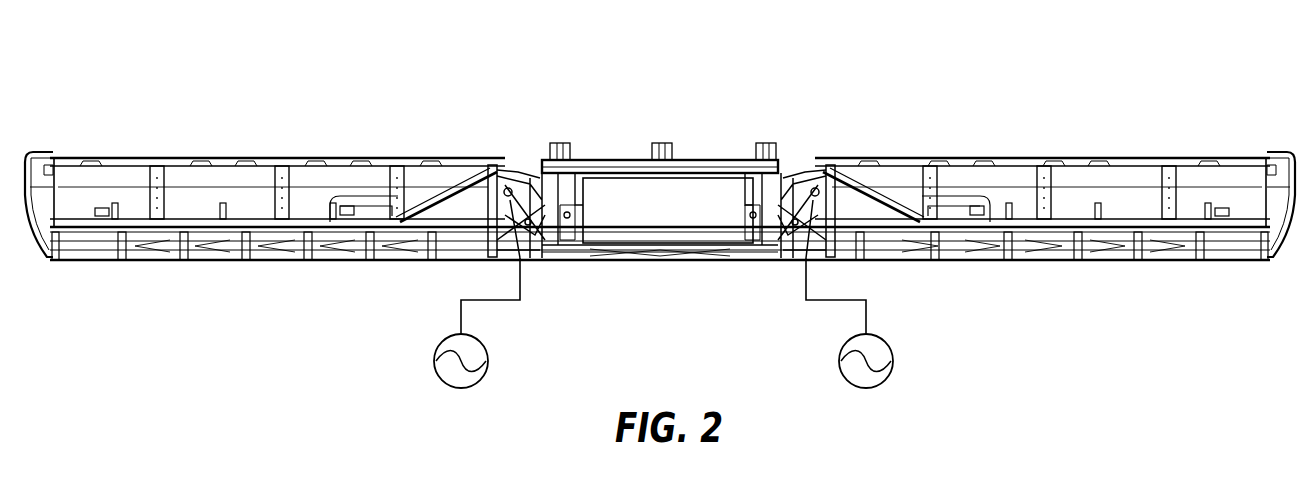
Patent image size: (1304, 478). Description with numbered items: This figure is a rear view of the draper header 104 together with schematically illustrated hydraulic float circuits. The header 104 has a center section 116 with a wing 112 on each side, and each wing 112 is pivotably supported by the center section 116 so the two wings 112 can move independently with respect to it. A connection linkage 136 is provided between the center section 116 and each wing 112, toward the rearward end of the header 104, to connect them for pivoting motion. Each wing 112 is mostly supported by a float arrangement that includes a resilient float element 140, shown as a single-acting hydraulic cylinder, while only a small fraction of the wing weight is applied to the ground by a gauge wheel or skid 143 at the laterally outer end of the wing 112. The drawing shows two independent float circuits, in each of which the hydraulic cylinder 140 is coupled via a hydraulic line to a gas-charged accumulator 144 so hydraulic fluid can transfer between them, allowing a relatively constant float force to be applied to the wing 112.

The header 104 is at (977, 52).
The wing 112 is at (213, 165).
The center section 116 is at (710, 160).
The connection linkage 136 is at (513, 160).
The resilient float element 140 is at (463, 168).
The skid 143 is at (58, 262).
The accumulator 144 is at (433, 390).